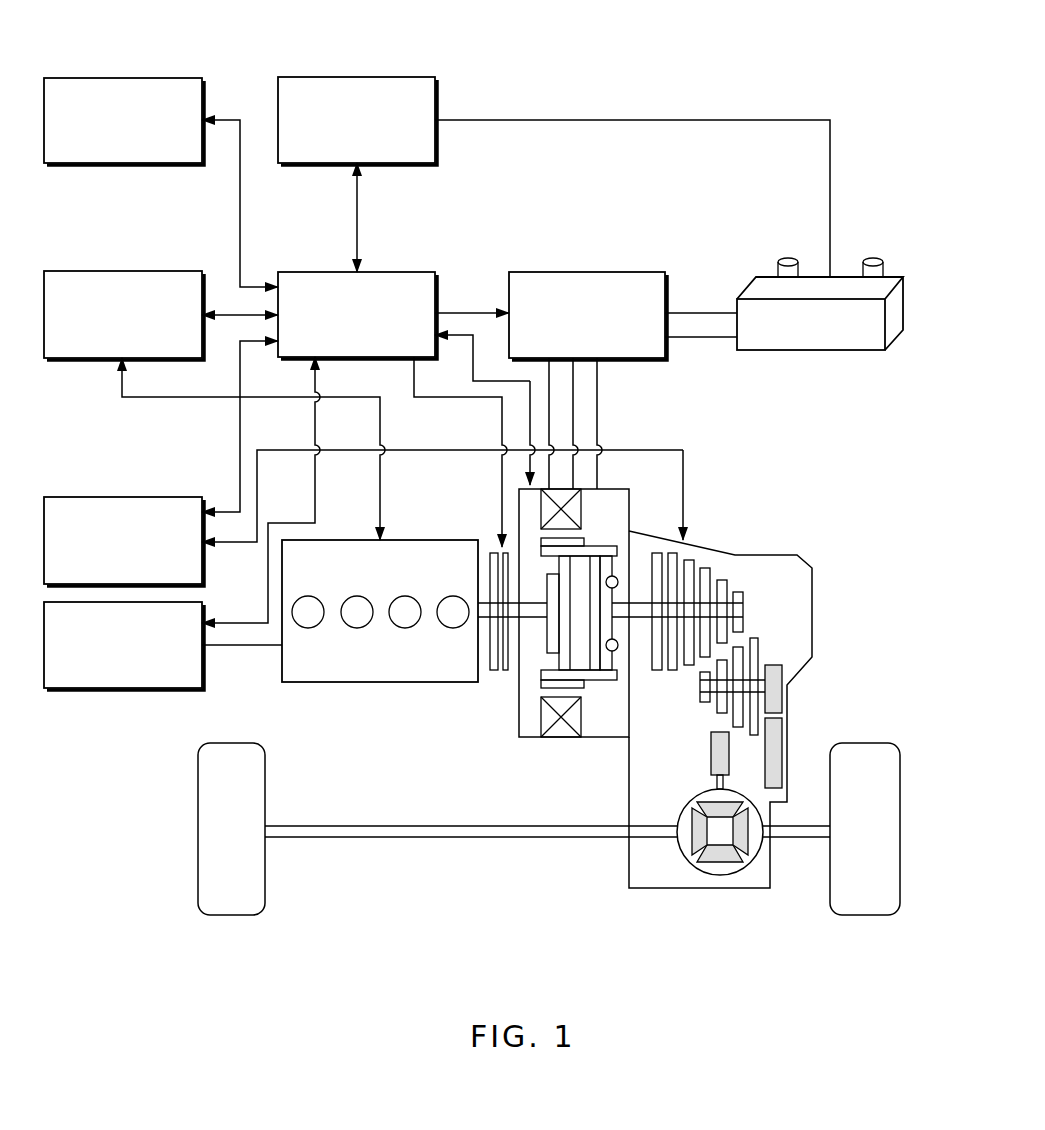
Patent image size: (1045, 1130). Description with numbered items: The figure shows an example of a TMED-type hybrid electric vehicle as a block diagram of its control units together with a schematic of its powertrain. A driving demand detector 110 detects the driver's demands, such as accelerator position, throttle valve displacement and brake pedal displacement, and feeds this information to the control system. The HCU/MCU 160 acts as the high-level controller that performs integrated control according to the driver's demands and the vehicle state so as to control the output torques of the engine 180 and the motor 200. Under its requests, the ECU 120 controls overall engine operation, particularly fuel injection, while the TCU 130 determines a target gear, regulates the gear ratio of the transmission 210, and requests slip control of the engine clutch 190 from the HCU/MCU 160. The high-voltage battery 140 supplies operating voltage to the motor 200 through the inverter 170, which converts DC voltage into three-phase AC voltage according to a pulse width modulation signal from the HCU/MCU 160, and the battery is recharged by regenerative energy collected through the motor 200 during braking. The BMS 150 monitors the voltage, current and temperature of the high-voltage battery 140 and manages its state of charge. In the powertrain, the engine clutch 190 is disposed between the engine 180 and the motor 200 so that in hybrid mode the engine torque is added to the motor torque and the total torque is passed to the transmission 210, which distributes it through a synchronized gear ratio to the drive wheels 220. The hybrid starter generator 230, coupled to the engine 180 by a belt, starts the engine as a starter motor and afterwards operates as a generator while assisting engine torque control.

The driving demand detector 110 is at (120, 78).
The electronic control unit (ECU) 120 is at (120, 271).
The transmission control unit (TCU) 130 is at (120, 497).
The high-voltage battery 140 is at (903, 277).
The BMS 150 is at (358, 77).
The HCU/MCU 160 is at (398, 272).
The inverter 170 is at (588, 272).
The engine 180 is at (334, 683).
The engine clutch 190 is at (502, 672).
The motor 200 is at (519, 737).
The transmission 210 is at (766, 555).
The drive wheels 220 is at (859, 743).
The hybrid starter generator (HSG) 230 is at (122, 690).